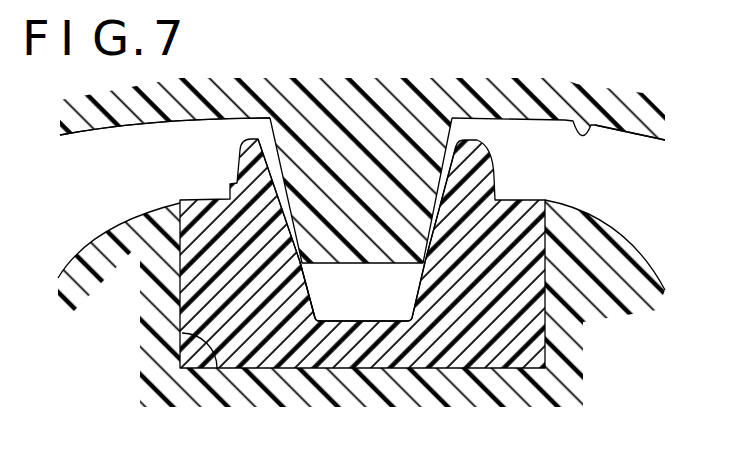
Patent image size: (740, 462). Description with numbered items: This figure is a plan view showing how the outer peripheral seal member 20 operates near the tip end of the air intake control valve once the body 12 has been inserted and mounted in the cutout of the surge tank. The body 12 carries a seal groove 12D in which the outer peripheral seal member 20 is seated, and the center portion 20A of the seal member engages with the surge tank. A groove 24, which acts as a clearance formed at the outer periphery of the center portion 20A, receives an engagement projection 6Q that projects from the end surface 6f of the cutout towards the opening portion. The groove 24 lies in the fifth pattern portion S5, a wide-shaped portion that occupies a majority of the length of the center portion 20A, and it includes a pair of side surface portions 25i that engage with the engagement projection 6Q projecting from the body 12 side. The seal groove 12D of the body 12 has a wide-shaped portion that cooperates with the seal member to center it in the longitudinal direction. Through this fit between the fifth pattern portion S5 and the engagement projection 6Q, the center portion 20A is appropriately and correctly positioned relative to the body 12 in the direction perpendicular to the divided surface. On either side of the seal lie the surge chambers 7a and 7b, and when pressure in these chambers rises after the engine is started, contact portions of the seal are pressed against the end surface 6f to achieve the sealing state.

The engagement projection 6Q is at (382, 238).
The end surface 6f is at (589, 128).
The fifth pattern portion S5 is at (500, 140).
The side surface portions 25i is at (295, 242).
The groove 24 is at (387, 293).
The center portion 20A is at (547, 323).
The outer peripheral seal member 20 is at (440, 253).
The body 12 is at (637, 237).
The seal groove 12D is at (217, 368).
The surge chamber 7a is at (105, 199).
The surge chamber 7b is at (655, 199).